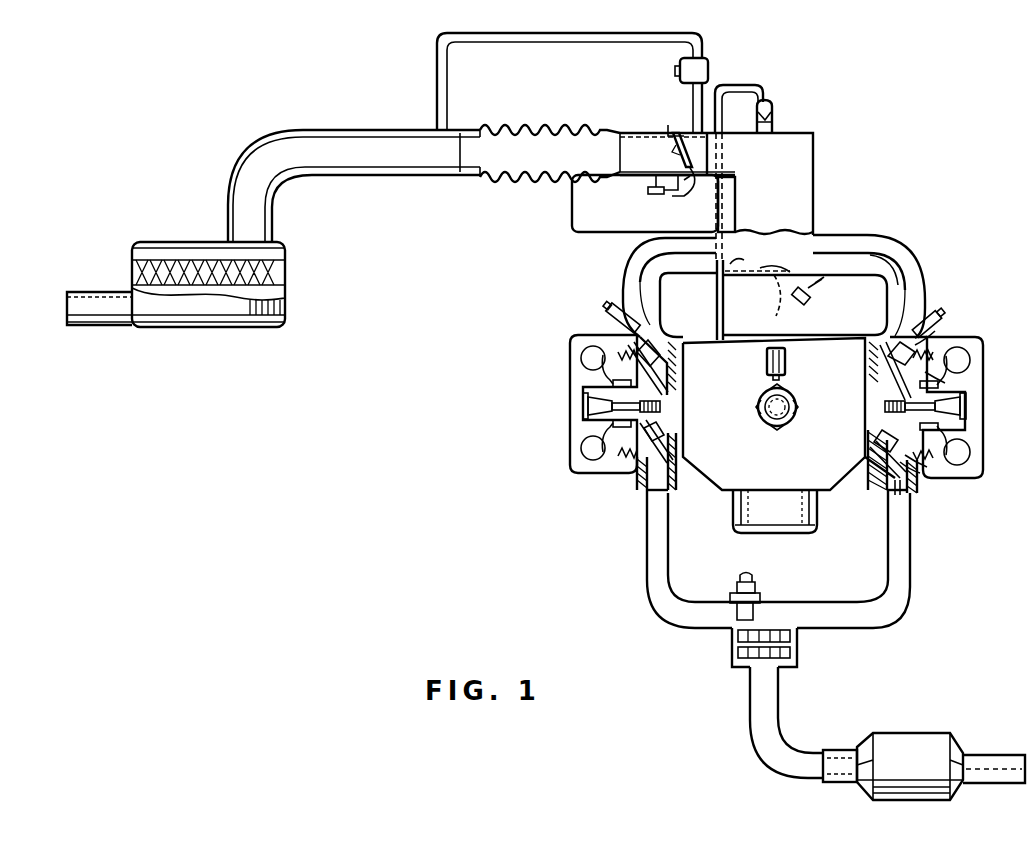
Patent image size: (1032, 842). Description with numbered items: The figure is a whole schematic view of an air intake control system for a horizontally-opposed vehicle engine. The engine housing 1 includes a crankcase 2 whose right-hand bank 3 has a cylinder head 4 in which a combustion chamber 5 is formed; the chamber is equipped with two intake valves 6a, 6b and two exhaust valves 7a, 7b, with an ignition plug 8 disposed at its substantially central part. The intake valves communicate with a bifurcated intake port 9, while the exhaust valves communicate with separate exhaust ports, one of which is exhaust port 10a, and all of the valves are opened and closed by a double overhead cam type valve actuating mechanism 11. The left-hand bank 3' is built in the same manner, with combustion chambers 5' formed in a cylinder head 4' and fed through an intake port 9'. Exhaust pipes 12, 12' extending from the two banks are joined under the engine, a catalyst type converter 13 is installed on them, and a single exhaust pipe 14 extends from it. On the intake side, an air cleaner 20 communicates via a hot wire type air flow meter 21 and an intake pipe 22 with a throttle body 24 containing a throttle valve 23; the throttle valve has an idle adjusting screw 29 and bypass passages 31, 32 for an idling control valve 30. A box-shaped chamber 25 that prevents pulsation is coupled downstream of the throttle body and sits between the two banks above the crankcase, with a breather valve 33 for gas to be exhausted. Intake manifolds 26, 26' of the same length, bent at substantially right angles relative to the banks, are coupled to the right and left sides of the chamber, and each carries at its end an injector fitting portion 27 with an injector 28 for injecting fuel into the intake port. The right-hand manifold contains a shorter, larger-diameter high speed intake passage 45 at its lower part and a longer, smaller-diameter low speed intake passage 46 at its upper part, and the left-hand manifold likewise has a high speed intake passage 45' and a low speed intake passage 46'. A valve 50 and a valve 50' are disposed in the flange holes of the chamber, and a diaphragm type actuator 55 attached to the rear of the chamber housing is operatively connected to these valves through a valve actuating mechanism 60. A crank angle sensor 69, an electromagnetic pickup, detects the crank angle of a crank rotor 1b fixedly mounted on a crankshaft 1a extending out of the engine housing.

The engine housing 1 is at (829, 517).
The crankshaft 1a is at (763, 397).
The crank rotor 1b is at (770, 426).
The crankcase 2 is at (790, 473).
The right-hand bank 3 is at (953, 411).
The left-hand bank 3' is at (599, 432).
The cylinder head 4 is at (911, 502).
The cylinder head 4' is at (636, 510).
The combustion chamber 5 is at (876, 447).
The combustion chamber 5' is at (676, 446).
The intake valve 6a is at (925, 348).
The intake valve 6b is at (930, 354).
The exhaust valve 7a is at (927, 468).
The exhaust valve 7b is at (910, 467).
The ignition plug 8 is at (966, 416).
The bifurcated intake port 9 is at (883, 354).
The intake port 9' is at (660, 351).
The exhaust port 10a is at (900, 492).
The valve actuating mechanism 11 is at (963, 380).
The exhaust pipe 12 is at (840, 559).
The exhaust pipe 12' is at (729, 559).
The catalyst type converter 13 is at (797, 655).
The single exhaust pipe 14 is at (803, 760).
The air cleaner 20 is at (212, 326).
The hot wire type air flow meter 21 is at (385, 146).
The intake pipe 22 is at (544, 128).
The throttle valve 23 is at (672, 140).
The throttle body 24 is at (633, 178).
The box-shaped chamber 25 is at (806, 183).
The intake manifold 26 is at (933, 287).
The intake manifold 26' is at (610, 295).
The injector fitting portion 27 is at (945, 330).
The injector 28 is at (615, 318).
The idle adjusting screw 29 is at (648, 190).
The idling control valve 30 is at (710, 73).
The bypass passage 31 is at (676, 193).
The bypass passage 32 is at (585, 42).
The breather valve 33 is at (774, 111).
The high speed intake passage 45 is at (903, 252).
The high speed intake passage 45' is at (688, 299).
The low speed intake passage 46 is at (869, 273).
The low speed intake passage 46' is at (650, 287).
The valve 50 is at (802, 300).
The valve 50' is at (747, 284).
The diaphragm type actuator 55 is at (804, 308).
The valve actuating mechanism 60 is at (762, 302).
The crank angle sensor 69 is at (785, 375).